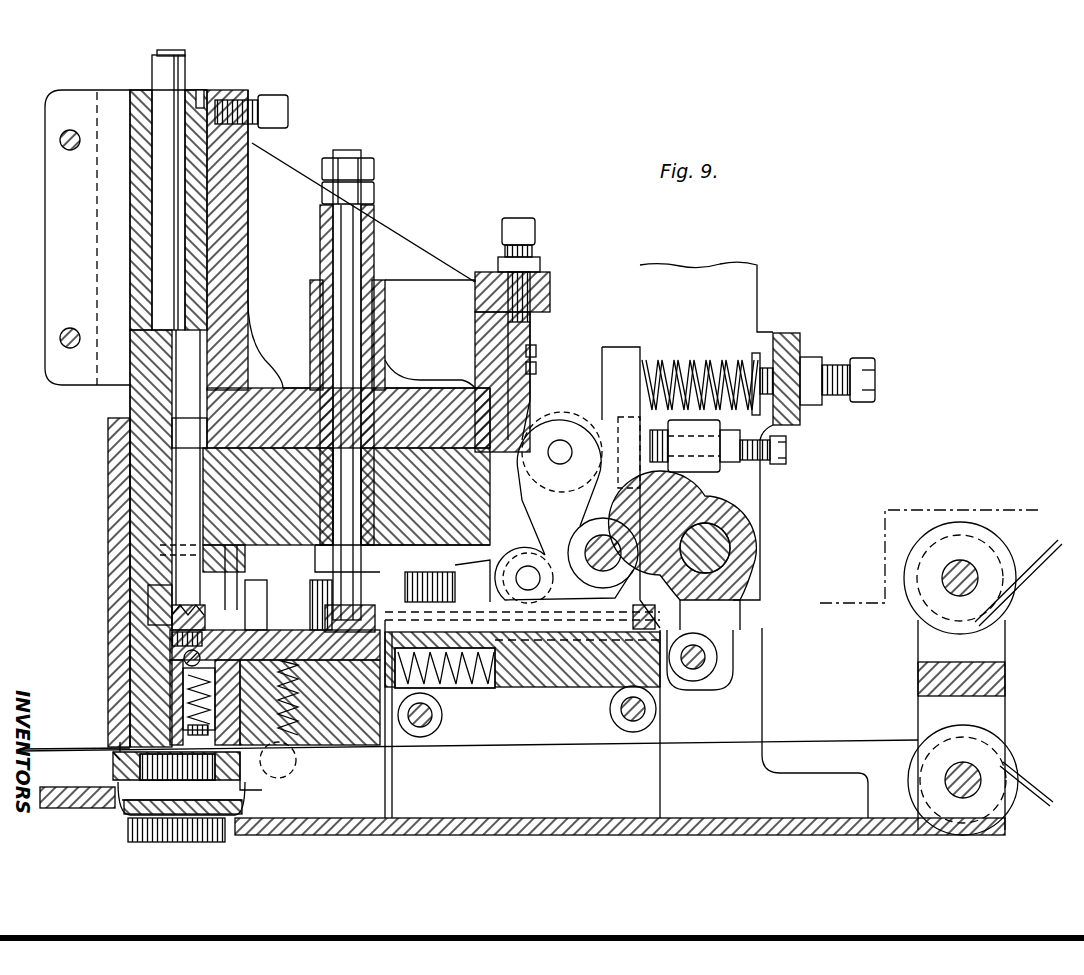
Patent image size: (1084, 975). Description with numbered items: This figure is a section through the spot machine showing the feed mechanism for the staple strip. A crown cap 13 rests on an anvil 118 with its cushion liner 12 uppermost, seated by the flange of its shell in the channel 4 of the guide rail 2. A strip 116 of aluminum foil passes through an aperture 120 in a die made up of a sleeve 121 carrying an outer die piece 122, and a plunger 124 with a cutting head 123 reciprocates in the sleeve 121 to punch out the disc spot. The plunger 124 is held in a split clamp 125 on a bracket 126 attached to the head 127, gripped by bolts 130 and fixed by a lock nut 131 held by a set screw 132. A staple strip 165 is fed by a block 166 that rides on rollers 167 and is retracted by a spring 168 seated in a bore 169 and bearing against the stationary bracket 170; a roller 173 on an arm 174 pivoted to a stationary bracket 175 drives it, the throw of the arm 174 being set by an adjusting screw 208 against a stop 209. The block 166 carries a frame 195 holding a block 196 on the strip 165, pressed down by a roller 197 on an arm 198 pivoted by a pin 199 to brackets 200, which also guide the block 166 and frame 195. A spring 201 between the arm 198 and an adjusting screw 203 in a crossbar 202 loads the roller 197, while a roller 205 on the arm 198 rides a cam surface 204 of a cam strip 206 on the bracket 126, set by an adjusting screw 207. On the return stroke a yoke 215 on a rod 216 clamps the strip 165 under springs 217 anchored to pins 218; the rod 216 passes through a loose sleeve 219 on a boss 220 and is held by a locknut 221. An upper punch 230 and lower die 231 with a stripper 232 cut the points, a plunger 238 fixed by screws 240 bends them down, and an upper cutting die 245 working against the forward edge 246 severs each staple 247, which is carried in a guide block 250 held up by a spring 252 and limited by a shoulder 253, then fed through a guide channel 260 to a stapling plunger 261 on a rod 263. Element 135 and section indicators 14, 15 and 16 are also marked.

The guide rail 2 is at (48, 806).
The channel 4 is at (80, 805).
The cushion liner 12 is at (82, 800).
The crown cap 13 is at (194, 792).
The section line 14 is at (1037, 486).
The section line 15 is at (266, 628).
The section line 16 is at (470, 620).
The strip 116 is at (44, 752).
The anvil 118 is at (128, 830).
The aperture 120 is at (122, 746).
The sleeve 121 is at (118, 480).
The outer die piece 122 is at (118, 770).
The cutting head 123 is at (260, 771).
The plunger 124 is at (143, 200).
The split clamp 125 is at (118, 270).
The bracket 126 is at (428, 275).
The head 127 is at (400, 450).
The bolts 130 is at (62, 148).
The lock nut 131 is at (200, 95).
The set screw 132 is at (276, 105).
The knurled member 135 is at (434, 570).
The staple strip 165 is at (644, 614).
The block 166 is at (560, 645).
The rollers 167 is at (442, 716).
The spring 168 is at (498, 665).
The bore 169 is at (533, 713).
The stationary bracket 170 is at (370, 790).
The roller 173 is at (700, 670).
The arm 174 is at (738, 605).
The stationary bracket 175 is at (760, 280).
The frame 195 is at (710, 615).
The block 196 is at (522, 724).
The roller 197 is at (475, 570).
The arm 198 is at (566, 504).
The pin 199 is at (608, 540).
The brackets 200 is at (757, 790).
The spring 201 is at (712, 362).
The crossbar 202 is at (792, 338).
The adjusting screw 203 is at (836, 365).
The cam surface 204 is at (540, 435).
The roller 205 is at (572, 445).
The cam strip 206 is at (520, 400).
The adjusting screw 207 is at (528, 236).
The adjusting screw 208 is at (788, 456).
The stop 209 is at (658, 465).
The yoke 215 is at (372, 620).
The rod 216 is at (358, 552).
The springs 217 is at (335, 748).
The pins 218 is at (300, 769).
The loose sleeve 219 is at (376, 322).
The boss 220 is at (372, 385).
The locknut 221 is at (376, 192).
The upper punch 230 is at (232, 580).
The lower die 231 is at (247, 605).
The stripper 232 is at (280, 628).
The plunger 238 is at (168, 553).
The screws 240 is at (160, 545).
The upper cutting die 245 is at (180, 462).
The forward edge 246 is at (182, 652).
The staple 247 is at (170, 640).
The staple guide block 250 is at (190, 697).
The spring 252 is at (190, 732).
The shoulder 253 is at (183, 682).
The guide channel 260 is at (170, 572).
The stapling plunger 261 is at (135, 432).
The rod 263 is at (160, 64).